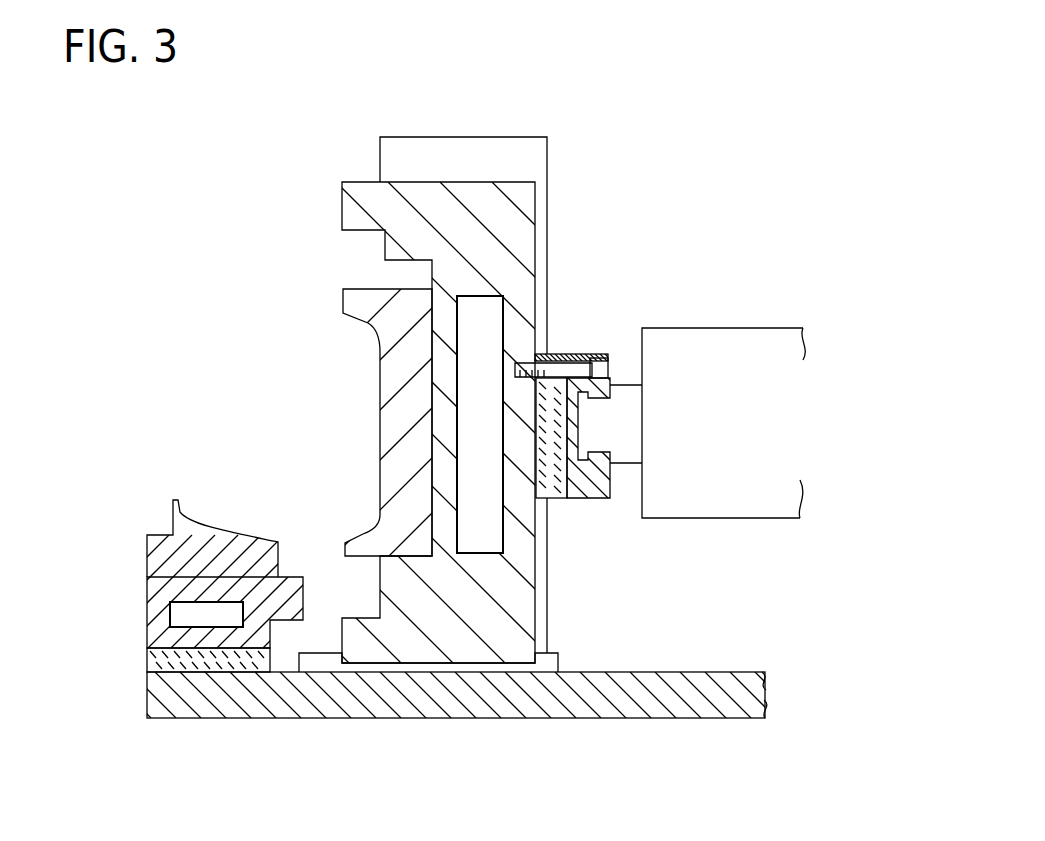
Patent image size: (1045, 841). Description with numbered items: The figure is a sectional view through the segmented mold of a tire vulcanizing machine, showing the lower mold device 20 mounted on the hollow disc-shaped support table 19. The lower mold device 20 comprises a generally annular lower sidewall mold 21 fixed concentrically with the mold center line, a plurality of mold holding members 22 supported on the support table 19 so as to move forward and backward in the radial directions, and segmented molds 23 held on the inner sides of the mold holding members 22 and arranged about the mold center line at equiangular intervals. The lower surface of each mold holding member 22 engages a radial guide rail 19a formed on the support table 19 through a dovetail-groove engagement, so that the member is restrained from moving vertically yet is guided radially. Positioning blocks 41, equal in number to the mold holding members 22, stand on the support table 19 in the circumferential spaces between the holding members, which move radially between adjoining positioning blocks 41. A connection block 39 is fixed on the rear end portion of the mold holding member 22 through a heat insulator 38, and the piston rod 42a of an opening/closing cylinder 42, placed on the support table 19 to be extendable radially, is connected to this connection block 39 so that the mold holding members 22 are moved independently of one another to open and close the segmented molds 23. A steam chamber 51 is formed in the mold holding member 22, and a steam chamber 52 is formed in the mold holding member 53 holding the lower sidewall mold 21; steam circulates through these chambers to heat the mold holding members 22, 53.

The support table 19 is at (487, 715).
The guide rail 19a is at (560, 663).
The lower mold device 20 is at (249, 380).
The lower sidewall mold 21 is at (225, 545).
The mold holding member 22 is at (513, 213).
The segmented mold 23 is at (395, 418).
The heat insulator 38 is at (557, 492).
The connection block 39 is at (602, 490).
The positioning block 41 is at (468, 145).
The opening/closing cylinder 42 is at (727, 343).
The piston rod 42a is at (628, 395).
The steam chamber 51 is at (488, 313).
The steam chamber 52 is at (177, 607).
The mold holding member 53 is at (167, 633).